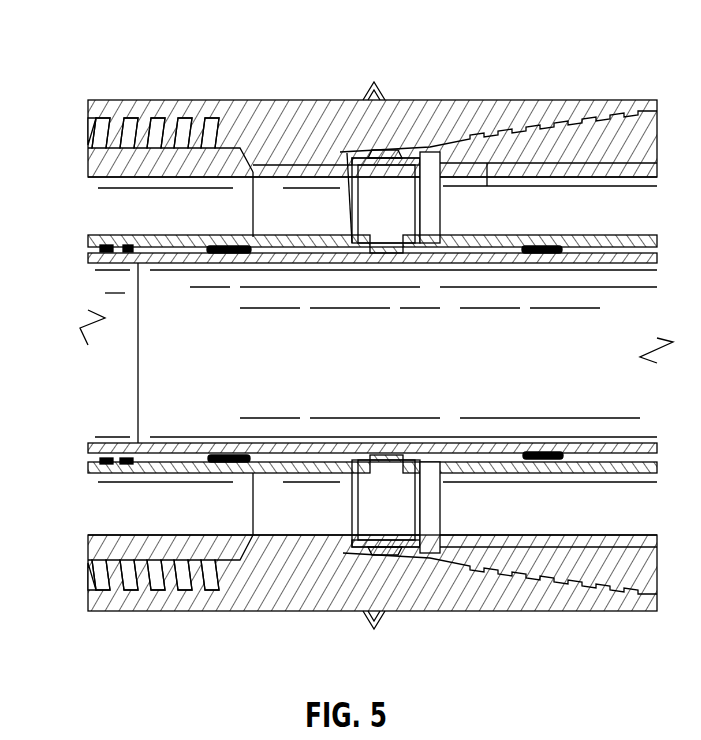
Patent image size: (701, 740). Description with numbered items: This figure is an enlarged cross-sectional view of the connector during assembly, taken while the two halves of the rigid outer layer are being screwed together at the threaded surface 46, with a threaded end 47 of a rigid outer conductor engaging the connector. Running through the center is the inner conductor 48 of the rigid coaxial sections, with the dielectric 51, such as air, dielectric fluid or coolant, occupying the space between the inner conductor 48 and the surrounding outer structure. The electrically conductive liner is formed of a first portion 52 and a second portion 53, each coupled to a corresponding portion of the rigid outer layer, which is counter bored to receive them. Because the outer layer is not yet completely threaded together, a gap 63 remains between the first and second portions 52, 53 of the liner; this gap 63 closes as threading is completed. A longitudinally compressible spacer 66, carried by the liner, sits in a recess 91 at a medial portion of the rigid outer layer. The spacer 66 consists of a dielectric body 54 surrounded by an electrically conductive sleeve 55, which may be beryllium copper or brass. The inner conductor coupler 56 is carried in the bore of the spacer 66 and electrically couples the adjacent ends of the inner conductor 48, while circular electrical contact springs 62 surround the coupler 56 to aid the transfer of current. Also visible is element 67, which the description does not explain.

The threaded surface 46 is at (560, 120).
The threaded end 47 is at (160, 123).
The inner conductor 48 is at (617, 470).
The dielectric 51 is at (105, 207).
The first portion of electrically conductive liner 52 is at (283, 172).
The second portion of electrically conductive liner 53 is at (487, 177).
The dielectric body 54 is at (380, 165).
The electrically conductive sleeve 55 is at (430, 150).
The inner conductor coupler 56 is at (268, 478).
The circular electrical contact spring 62 is at (225, 242).
The gap 63 is at (427, 473).
The longitudinally compressible spacer 66 is at (373, 557).
The seal 67 is at (538, 242).
The recess 91 is at (347, 153).